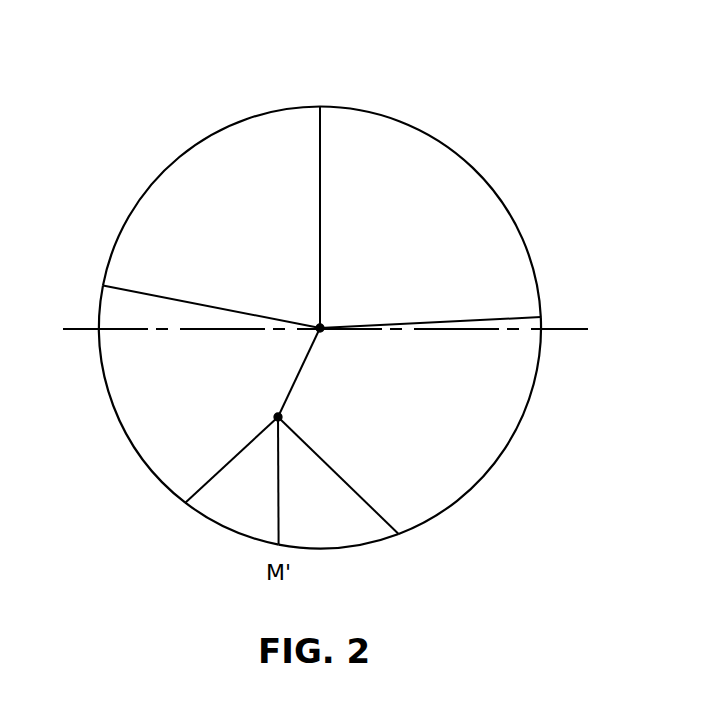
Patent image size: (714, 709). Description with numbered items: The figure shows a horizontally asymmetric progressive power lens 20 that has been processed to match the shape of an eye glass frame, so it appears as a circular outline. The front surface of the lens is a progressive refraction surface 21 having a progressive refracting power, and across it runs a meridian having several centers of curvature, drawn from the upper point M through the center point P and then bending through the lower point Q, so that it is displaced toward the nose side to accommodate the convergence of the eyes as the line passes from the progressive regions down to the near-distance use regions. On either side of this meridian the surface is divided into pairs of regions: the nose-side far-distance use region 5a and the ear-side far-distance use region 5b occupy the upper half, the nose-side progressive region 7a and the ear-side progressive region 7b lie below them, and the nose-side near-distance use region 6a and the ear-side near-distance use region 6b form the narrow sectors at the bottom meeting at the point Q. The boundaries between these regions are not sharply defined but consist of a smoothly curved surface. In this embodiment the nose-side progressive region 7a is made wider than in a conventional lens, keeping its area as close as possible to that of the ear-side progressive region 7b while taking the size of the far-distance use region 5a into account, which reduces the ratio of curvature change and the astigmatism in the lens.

The horizontally asymmetric progressive power lens 20 is at (431, 117).
The progressive refraction surface 21 is at (478, 207).
The nose-side far-distance use region 5a is at (211, 218).
The ear-side far-distance use region 5b is at (430, 217).
The nose-side near-distance use region 6a is at (231, 481).
The ear-side near-distance use region 6b is at (338, 482).
The nose-side progressive region 7a is at (155, 393).
The ear-side progressive region 7b is at (409, 425).
The center point P is at (322, 325).
The point Q is at (282, 414).
The meridian having several centers of curvature (upper end point) M is at (319, 83).